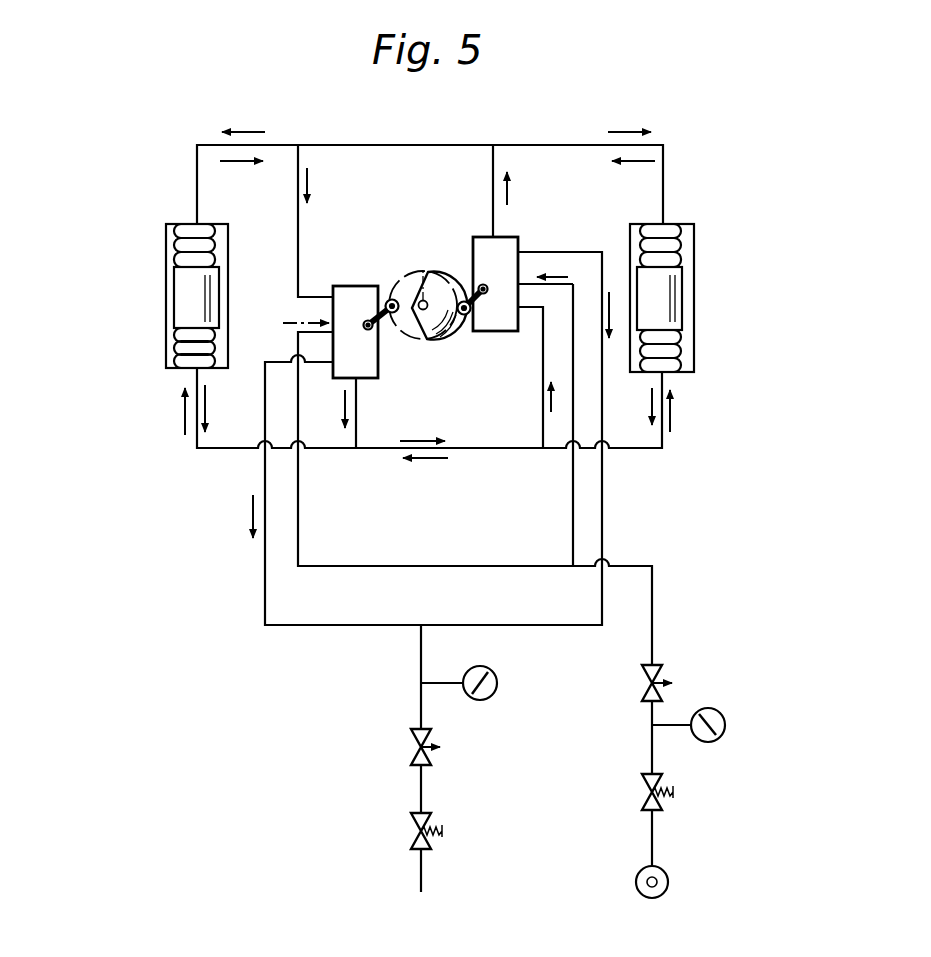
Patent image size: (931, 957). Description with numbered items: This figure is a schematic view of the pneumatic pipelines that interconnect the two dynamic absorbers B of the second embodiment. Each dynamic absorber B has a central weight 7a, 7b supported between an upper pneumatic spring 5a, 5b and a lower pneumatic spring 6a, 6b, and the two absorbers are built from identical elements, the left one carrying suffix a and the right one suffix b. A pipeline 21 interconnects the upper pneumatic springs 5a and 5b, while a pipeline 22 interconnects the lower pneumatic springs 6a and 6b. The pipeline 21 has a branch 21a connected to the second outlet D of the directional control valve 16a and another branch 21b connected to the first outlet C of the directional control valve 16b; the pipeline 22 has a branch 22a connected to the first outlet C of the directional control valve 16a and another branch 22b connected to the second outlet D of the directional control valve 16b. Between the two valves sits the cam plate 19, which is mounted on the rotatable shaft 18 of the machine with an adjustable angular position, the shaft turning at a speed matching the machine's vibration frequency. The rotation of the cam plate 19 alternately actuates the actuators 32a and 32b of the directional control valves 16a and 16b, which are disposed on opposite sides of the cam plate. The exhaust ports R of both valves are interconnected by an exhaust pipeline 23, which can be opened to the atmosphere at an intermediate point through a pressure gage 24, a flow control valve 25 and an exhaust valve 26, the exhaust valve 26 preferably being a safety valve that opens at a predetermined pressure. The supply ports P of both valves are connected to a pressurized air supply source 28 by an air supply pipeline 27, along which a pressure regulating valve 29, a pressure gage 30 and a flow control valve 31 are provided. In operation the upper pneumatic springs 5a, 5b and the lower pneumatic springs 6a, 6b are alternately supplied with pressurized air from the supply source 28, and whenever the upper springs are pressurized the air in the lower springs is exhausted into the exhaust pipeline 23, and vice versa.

The pipeline 21 is at (418, 145).
The branch 21a is at (298, 207).
The branch 21b is at (493, 186).
The dynamic absorber B is at (182, 224).
The upper pneumatic spring 5a is at (178, 247).
The central weight 7a is at (180, 290).
The lower pneumatic spring 6a is at (178, 346).
The upper pneumatic spring 5b is at (683, 249).
The central weight 7b is at (683, 299).
The lower pneumatic spring 6b is at (683, 354).
The directional control valve 16a is at (351, 286).
The directional control valve 16b is at (473, 264).
The first outlet C is at (423, 311).
The shaft 18 is at (418, 300).
The cam plate 19 is at (442, 334).
The actuator 32a is at (386, 318).
The actuator 32b is at (470, 320).
The pipeline 22 is at (212, 453).
The branch 22a is at (357, 423).
The branch 22b is at (541, 423).
The exhaust pipeline 23 is at (603, 508).
The air supply pipeline 27 is at (364, 567).
The pressure gage 24 is at (494, 696).
The flow control valve 25 is at (410, 753).
The exhaust valve 26 is at (410, 837).
The flow control valve 31 is at (643, 693).
The pressure gage 30 is at (711, 742).
The pressure regulating valve 29 is at (643, 797).
The pressurized air supply source 28 is at (666, 891).